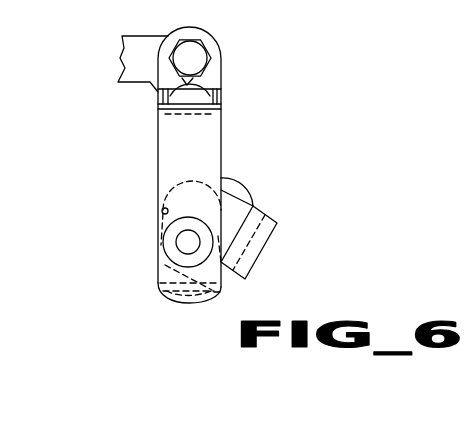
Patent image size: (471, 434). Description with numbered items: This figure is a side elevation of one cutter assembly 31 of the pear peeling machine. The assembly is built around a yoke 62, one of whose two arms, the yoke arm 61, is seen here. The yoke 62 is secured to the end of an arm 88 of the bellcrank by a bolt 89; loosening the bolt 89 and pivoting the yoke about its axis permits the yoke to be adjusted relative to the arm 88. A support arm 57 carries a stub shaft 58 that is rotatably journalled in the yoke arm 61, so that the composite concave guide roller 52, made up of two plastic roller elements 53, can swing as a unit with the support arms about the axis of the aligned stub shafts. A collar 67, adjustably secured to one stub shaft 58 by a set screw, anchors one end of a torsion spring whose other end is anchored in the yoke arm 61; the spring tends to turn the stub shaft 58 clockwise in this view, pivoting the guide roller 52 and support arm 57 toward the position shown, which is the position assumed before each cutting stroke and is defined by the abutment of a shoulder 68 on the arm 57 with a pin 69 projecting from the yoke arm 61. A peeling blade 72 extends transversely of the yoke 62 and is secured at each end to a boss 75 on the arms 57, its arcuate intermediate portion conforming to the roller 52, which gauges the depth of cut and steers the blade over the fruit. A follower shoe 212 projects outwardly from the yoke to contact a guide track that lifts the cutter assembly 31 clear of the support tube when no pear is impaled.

The cutter assembly 31 is at (233, 131).
The yoke arm 61 is at (177, 138).
The bellcrank arm 88 is at (138, 62).
The bolt 89 is at (198, 63).
The yoke 62 is at (153, 120).
The composite concave guide roller 52 is at (240, 170).
The plastic roller element 53 is at (244, 184).
The support arm 57 is at (228, 257).
The pin 69 is at (162, 209).
The shoulder 68 is at (183, 215).
The stub shaft 58 is at (183, 242).
The collar 67 is at (177, 251).
The boss 75 is at (160, 283).
The peeling blade 72 is at (163, 291).
The follower shoe 212 is at (222, 292).